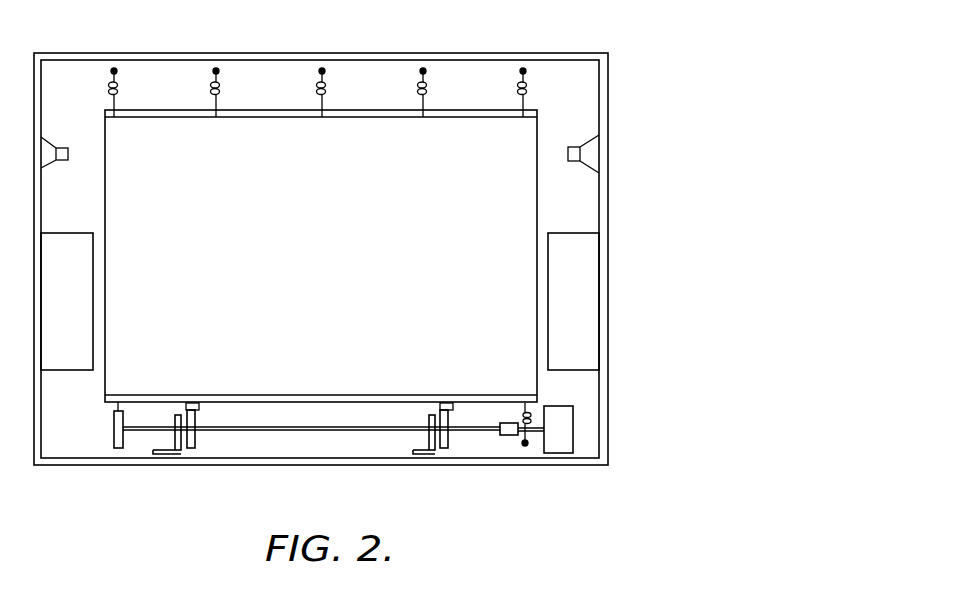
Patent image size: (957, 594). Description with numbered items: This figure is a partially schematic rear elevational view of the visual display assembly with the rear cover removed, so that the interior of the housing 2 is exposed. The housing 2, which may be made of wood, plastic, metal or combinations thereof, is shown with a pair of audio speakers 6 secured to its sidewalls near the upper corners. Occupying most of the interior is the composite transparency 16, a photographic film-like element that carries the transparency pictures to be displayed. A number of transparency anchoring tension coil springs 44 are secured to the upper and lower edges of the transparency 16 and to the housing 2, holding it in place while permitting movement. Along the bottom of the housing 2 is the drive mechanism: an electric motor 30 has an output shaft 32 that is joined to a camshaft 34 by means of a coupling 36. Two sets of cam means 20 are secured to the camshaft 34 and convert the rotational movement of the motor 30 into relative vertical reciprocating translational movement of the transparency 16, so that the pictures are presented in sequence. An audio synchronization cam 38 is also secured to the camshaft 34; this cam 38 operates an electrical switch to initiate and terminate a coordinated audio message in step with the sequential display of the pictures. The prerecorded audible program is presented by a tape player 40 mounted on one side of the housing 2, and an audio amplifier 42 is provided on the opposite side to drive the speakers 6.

The housing 2 is at (471, 53).
The audio speakers 6 is at (45, 140).
The composite transparency 16 is at (333, 265).
The cam means 20 is at (192, 450).
The electric motor 30 is at (567, 432).
The output shaft 32 is at (532, 440).
The camshaft 34 is at (146, 431).
The coupling 36 is at (509, 437).
The audio synchronization cam 38 is at (113, 437).
The tape player 40 is at (82, 297).
The audio amplifier 42 is at (590, 297).
The transparency anchoring tension coil springs 44 is at (209, 90).